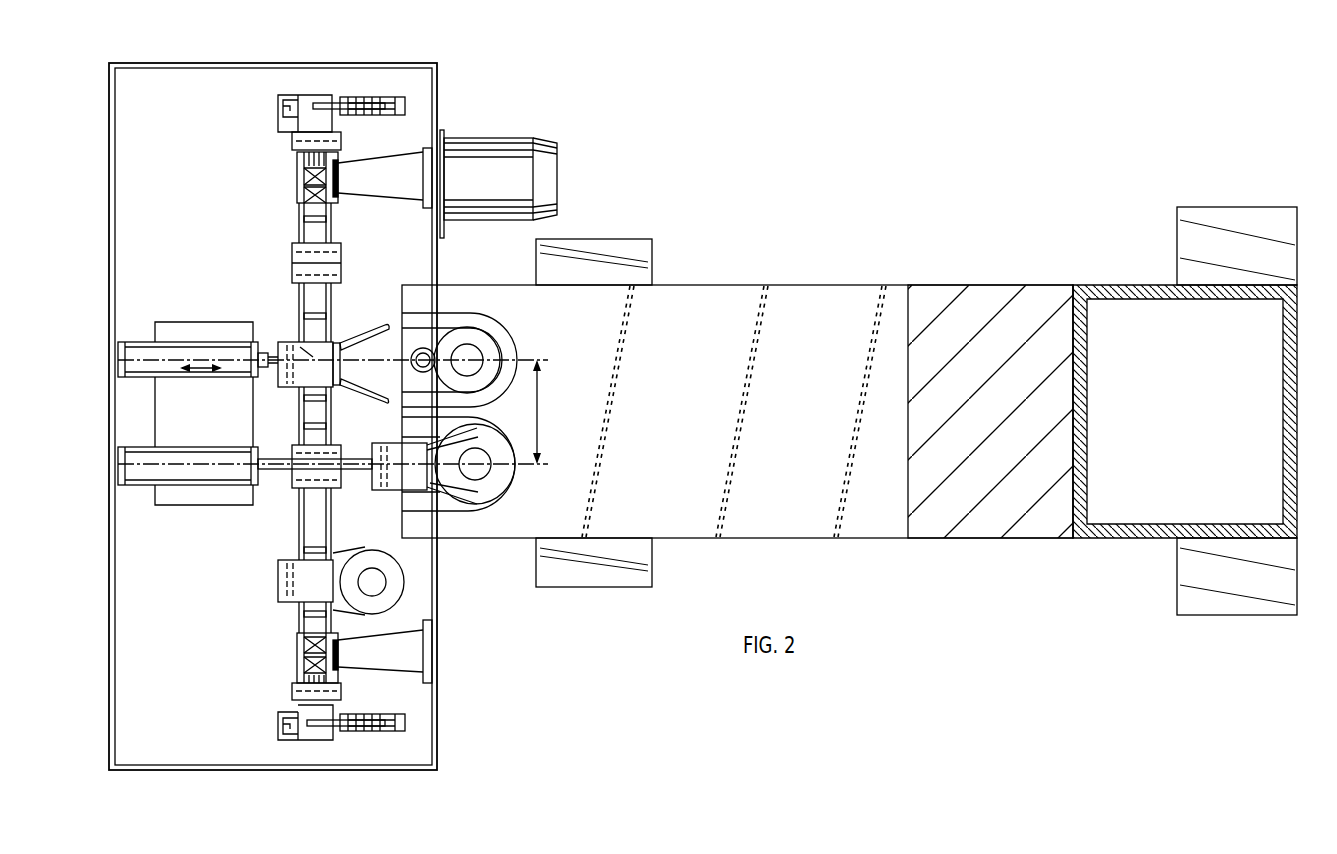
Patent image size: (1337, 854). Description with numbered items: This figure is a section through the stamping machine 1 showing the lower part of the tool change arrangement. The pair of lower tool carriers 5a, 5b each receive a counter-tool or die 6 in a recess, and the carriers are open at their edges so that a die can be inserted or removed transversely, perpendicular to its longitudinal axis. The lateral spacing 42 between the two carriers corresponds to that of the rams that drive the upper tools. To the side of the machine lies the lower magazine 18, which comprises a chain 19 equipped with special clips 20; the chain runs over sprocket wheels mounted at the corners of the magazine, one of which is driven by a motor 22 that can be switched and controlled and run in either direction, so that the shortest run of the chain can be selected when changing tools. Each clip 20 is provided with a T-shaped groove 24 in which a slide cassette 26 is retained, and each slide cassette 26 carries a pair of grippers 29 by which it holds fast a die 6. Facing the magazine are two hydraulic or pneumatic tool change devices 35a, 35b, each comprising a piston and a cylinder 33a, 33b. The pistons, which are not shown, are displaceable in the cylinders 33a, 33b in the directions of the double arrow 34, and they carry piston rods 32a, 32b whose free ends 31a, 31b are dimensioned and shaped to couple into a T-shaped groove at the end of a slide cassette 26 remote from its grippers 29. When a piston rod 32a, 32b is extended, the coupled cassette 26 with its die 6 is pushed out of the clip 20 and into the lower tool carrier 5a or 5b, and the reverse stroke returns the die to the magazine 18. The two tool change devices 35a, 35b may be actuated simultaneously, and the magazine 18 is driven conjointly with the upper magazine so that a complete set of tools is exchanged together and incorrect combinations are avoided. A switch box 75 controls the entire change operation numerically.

The stamping machine 1 is at (793, 551).
The lower tool carrier 5a is at (487, 328).
The lower tool carrier 5b is at (487, 502).
The die 6 is at (403, 103).
The lower magazine 18 is at (288, 631).
The chain 19 is at (300, 308).
The clip 20 is at (292, 137).
The motor 22 is at (548, 158).
The T-shaped groove 24 is at (340, 262).
The slide cassette 26 is at (307, 102).
The pair of grippers 29 is at (363, 101).
The free end of piston rod 31a is at (340, 338).
The free end of piston rod 31b is at (377, 460).
The piston rod 32a is at (265, 375).
The piston rod 32b is at (277, 470).
The hydraulic or pneumatic cylinder 33a is at (145, 358).
The hydraulic or pneumatic cylinder 33b is at (138, 467).
The double arrow 34 is at (190, 378).
The tool change device 35a is at (184, 333).
The tool change device 35b is at (211, 495).
The lateral spacing 42 is at (540, 413).
The switch box 75 is at (1083, 522).